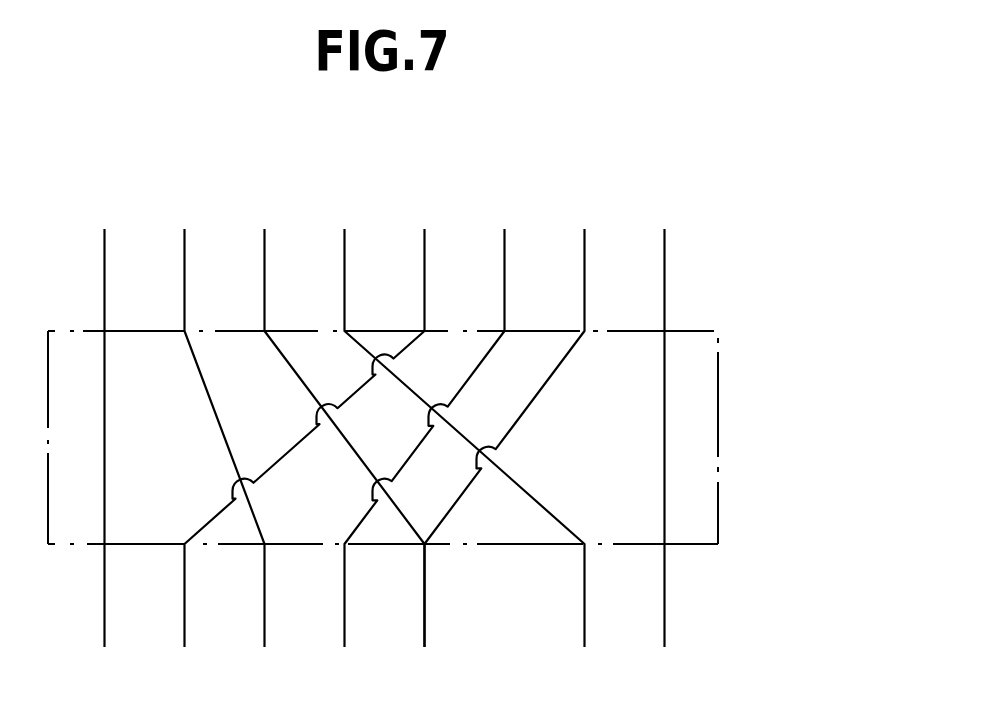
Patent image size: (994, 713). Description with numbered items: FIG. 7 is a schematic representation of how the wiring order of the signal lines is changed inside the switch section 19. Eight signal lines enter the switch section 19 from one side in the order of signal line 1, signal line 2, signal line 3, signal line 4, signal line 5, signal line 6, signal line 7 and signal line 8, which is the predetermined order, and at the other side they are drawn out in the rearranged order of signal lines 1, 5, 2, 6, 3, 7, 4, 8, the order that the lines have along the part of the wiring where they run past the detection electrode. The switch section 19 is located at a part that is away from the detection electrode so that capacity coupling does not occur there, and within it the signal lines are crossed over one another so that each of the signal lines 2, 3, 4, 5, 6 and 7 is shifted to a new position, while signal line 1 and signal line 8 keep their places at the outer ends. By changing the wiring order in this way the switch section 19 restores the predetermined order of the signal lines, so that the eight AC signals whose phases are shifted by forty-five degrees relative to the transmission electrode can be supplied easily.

The signal line 1 is at (384, 437).
The signal line 2 is at (224, 437).
The signal line 3 is at (344, 437).
The signal line 4 is at (464, 437).
The signal line 5 is at (304, 437).
The signal line 6 is at (424, 437).
The signal line 7 is at (510, 437).
The signal line 8 is at (664, 413).
The switch section 19 is at (719, 378).